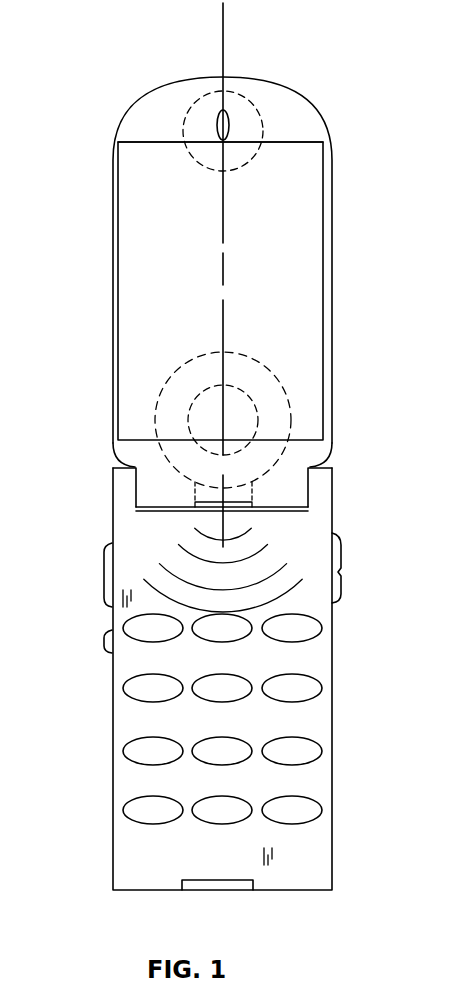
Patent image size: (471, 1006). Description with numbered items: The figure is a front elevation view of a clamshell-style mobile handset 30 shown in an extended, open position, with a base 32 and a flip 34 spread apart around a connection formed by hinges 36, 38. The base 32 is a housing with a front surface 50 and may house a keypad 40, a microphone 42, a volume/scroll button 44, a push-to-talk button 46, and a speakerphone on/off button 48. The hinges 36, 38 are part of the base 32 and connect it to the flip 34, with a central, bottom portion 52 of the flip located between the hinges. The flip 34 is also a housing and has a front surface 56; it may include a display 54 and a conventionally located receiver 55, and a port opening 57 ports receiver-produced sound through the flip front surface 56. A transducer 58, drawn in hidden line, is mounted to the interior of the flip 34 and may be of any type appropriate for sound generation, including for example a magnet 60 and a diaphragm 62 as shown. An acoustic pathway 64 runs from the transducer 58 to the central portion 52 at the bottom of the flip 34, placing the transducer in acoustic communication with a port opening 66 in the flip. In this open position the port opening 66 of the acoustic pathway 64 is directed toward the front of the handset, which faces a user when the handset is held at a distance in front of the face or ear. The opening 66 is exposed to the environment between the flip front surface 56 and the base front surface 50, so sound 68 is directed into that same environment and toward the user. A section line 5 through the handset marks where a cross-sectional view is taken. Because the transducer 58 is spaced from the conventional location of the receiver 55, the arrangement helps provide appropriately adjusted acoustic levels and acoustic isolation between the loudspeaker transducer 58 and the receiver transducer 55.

The section line 5- 5 is at (180, 23).
The handset 30 is at (145, 72).
The base 32 is at (113, 833).
The flip 34 is at (328, 125).
The hinge 36 is at (123, 490).
The hinge 38 is at (327, 483).
The keypad 40 is at (147, 752).
The microphone 42 is at (235, 890).
The volume/scroll button 44 is at (342, 552).
The push-to-talk button 46 is at (104, 565).
The speakerphone on/off button 48 is at (104, 640).
The front surface 50 is at (308, 722).
The central bottom portion 52 is at (302, 499).
The display 54 is at (308, 228).
The receiver 55 is at (240, 92).
The flip front surface 56 is at (145, 130).
The port opening 57 is at (229, 135).
The transducer 58 is at (257, 358).
The magnet 60 is at (215, 385).
The diaphragm 62 is at (170, 375).
The acoustic pathway 64 is at (243, 488).
The port opening 66 is at (195, 502).
The sound 68 is at (303, 577).